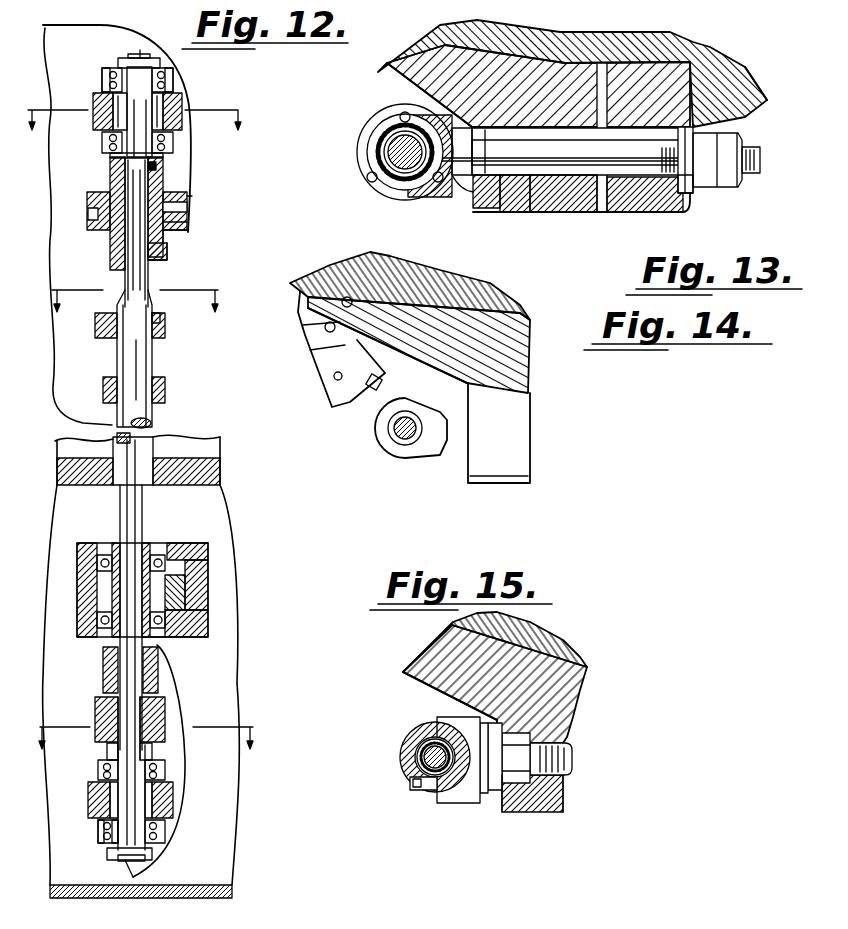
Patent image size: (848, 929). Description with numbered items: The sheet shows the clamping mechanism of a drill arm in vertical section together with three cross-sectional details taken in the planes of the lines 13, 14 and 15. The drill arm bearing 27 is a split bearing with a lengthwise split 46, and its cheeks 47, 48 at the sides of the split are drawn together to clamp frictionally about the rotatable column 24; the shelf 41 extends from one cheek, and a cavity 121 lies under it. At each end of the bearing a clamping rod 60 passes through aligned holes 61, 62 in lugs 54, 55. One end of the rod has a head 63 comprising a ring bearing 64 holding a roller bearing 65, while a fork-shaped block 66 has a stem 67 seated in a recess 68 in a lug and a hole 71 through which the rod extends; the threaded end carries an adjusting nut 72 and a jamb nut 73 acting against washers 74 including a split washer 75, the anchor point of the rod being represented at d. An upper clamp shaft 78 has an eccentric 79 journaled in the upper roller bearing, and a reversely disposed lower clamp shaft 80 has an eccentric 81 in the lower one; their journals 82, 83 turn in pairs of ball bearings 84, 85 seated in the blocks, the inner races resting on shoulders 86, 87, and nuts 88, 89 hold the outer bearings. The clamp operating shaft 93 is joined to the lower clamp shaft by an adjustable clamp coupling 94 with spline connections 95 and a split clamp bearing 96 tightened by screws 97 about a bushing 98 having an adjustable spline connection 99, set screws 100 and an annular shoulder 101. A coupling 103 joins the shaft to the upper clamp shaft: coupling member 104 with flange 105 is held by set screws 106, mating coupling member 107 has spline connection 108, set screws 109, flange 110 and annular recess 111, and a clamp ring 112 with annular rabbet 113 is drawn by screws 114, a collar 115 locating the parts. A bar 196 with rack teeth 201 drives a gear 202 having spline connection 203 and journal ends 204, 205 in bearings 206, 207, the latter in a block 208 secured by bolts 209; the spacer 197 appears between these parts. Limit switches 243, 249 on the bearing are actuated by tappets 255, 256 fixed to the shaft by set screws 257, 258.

In FIG. 12, the section line 13— 13 is at (138, 134).
In FIG. 12, the section line 14— 14 is at (144, 311).
In FIG. 12, the section line 15— 15 is at (144, 746).
In FIG. 13, the column 24 is at (683, 43).
In FIG. 14, the column 24 is at (520, 306).
In FIG. 15, the column 24 is at (565, 631).
In FIG. 12, the bearing 27 is at (60, 398).
In FIG. 13, the bearing 27 is at (745, 68).
In FIG. 14, the bearing 27 is at (530, 352).
In FIG. 15, the bearing 27 is at (580, 690).
In FIG. 12, the shelf 41 is at (205, 462).
In FIG. 13, the split 46 is at (603, 212).
In FIG. 13, the cheek 47 is at (398, 72).
In FIG. 14, the cheek 47 is at (510, 380).
In FIG. 15, the cheek 47 is at (556, 700).
In FIG. 13, the cheek 48 is at (752, 97).
In FIG. 12, the lug 54 is at (130, 890).
In FIG. 13, the lug 54 is at (565, 205).
In FIG. 14, the lug 54 is at (516, 432).
In FIG. 15, the lug 54 is at (562, 791).
In FIG. 13, the lug 55 is at (668, 200).
In FIG. 13, the clamping rod 60 is at (640, 212).
In FIG. 15, the clamping rod 60 is at (572, 762).
In FIG. 13, the hole 61 is at (540, 165).
In FIG. 13, the hole 62 is at (595, 162).
In FIG. 12, the head 63 is at (182, 110).
In FIG. 13, the head 63 is at (393, 135).
In FIG. 15, the head 63 is at (452, 803).
In FIG. 12, the ring bearing 64 is at (93, 106).
In FIG. 13, the ring bearing 64 is at (383, 185).
In FIG. 12, the roller bearing 65 is at (160, 108).
In FIG. 13, the roller bearing 65 is at (408, 178).
In FIG. 12, the block 66 is at (102, 74).
In FIG. 13, the block 66 is at (465, 195).
In FIG. 15, the block 66 is at (497, 790).
In FIG. 13, the stem 67 is at (485, 208).
In FIG. 15, the stem 67 is at (508, 812).
In FIG. 13, the recess 68 is at (512, 212).
In FIG. 15, the recess 68 is at (558, 812).
In FIG. 13, the hole 71 is at (492, 175).
In FIG. 15, the hole 71 is at (515, 758).
In FIG. 13, the adjusting nut 72 is at (722, 187).
In FIG. 13, the jamb nut 73 is at (750, 173).
In FIG. 13, the washers 74 is at (690, 190).
In FIG. 13, the split washer 75 is at (693, 132).
In FIG. 13, the anchor point d is at (700, 162).
In FIG. 12, the upper clamp shaft 78 is at (142, 56).
In FIG. 13, the upper clamp shaft 78 is at (378, 140).
In FIG. 12, the eccentric 79 is at (150, 103).
In FIG. 13, the eccentric 79 is at (388, 152).
In FIG. 12, the lower clamp shaft 80 is at (130, 870).
In FIG. 15, the lower clamp shaft 80 is at (423, 762).
In FIG. 12, the eccentric 81 is at (165, 770).
In FIG. 15, the eccentric 81 is at (478, 800).
In FIG. 12, the journal 82 is at (108, 70).
In FIG. 12, the journal 83 is at (152, 145).
In FIG. 12, the ball bearing 84 is at (170, 80).
In FIG. 12, the ball bearing 85 is at (173, 138).
In FIG. 12, the shoulder 86 is at (104, 85).
In FIG. 12, the shoulder 87 is at (116, 120).
In FIG. 12, the nut 88 is at (135, 58).
In FIG. 12, the nut 89 is at (152, 855).
In FIG. 12, the clamp operating shaft 93 is at (152, 420).
In FIG. 14, the clamp operating shaft 93 is at (405, 440).
In FIG. 12, the adjustable clamp coupling 94 is at (168, 692).
In FIG. 15, the adjustable clamp coupling 94 is at (408, 735).
In FIG. 12, the spline connections 95 is at (126, 658).
In FIG. 12, the split clamp bearing 96 is at (98, 705).
In FIG. 15, the split clamp bearing 96 is at (412, 780).
In FIG. 15, the screws 97 is at (418, 787).
In FIG. 12, the bushing 98 is at (165, 712).
In FIG. 15, the bushing 98 is at (417, 752).
In FIG. 12, the adjustable spline connection 99 is at (138, 722).
In FIG. 15, the adjustable spline connection 99 is at (430, 740).
In FIG. 12, the set screws 100 is at (152, 750).
In FIG. 12, the annular shoulder 101 is at (107, 750).
In FIG. 12, the coupling 103 is at (98, 238).
In FIG. 13, the coupling 103 is at (372, 186).
In FIG. 12, the coupling member 104 is at (112, 180).
In FIG. 12, the flange 105 is at (187, 212).
In FIG. 12, the set screws 106 is at (158, 166).
In FIG. 12, the mating coupling member 107 is at (167, 250).
In FIG. 12, the spline connection 108 is at (136, 280).
In FIG. 12, the set screws 109 is at (165, 262).
In FIG. 12, the flange 110 is at (170, 236).
In FIG. 12, the annular recess 111 is at (187, 224).
In FIG. 12, the clamp ring 112 is at (175, 200).
In FIG. 12, the annular rabbet 113 is at (192, 196).
In FIG. 12, the screws 114 is at (90, 218).
In FIG. 13, the screws 114 is at (367, 177).
In FIG. 12, the collar 115 is at (110, 158).
In FIG. 12, the cavity 121 is at (232, 515).
In FIG. 12, the bar 196 is at (190, 575).
In FIG. 12, the spacer 197 is at (196, 590).
In FIG. 12, the rack teeth 201 is at (208, 560).
In FIG. 12, the gear 202 is at (183, 552).
In FIG. 12, the spline connection 203 is at (146, 548).
In FIG. 12, the journal end 204 is at (112, 545).
In FIG. 12, the journal end 205 is at (160, 640).
In FIG. 12, the bearing 206 is at (98, 558).
In FIG. 12, the bearing 207 is at (80, 624).
In FIG. 12, the block 208 is at (208, 608).
In FIG. 12, the bolts 209 is at (208, 625).
In FIG. 14, the limit switch 243 is at (380, 386).
In FIG. 14, the limit switch 249 is at (343, 395).
In FIG. 12, the switch operating tappet 255 is at (165, 335).
In FIG. 14, the switch operating tappet 255 is at (415, 405).
In FIG. 12, the switch operating tappet 256 is at (165, 385).
In FIG. 14, the switch operating tappet 256 is at (438, 432).
In FIG. 12, the set screw 257 is at (162, 318).
In FIG. 12, the set screw 258 is at (165, 398).